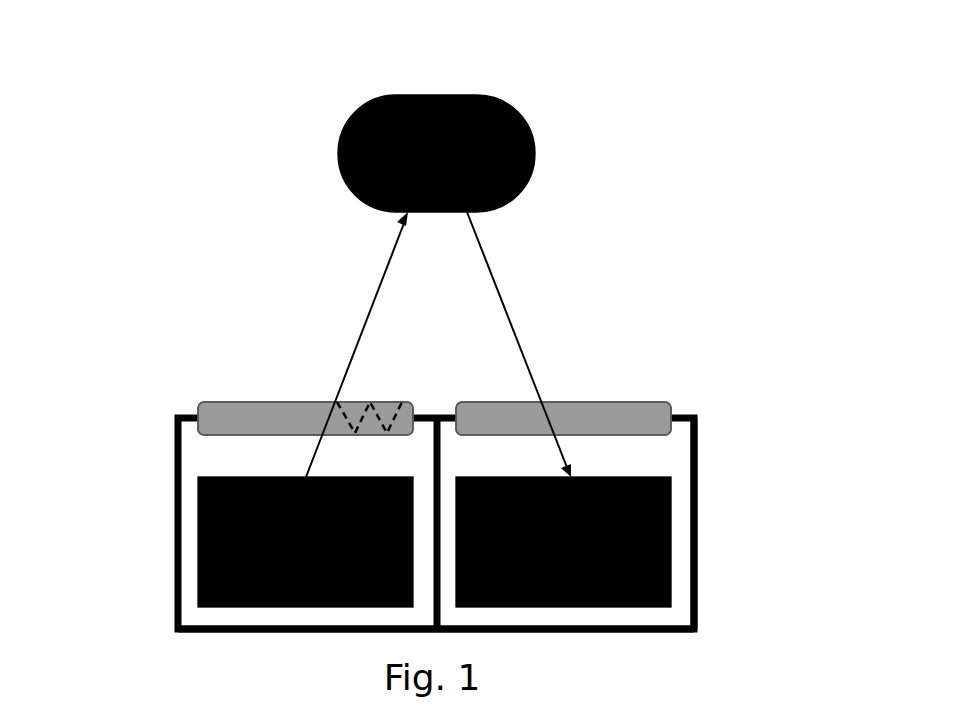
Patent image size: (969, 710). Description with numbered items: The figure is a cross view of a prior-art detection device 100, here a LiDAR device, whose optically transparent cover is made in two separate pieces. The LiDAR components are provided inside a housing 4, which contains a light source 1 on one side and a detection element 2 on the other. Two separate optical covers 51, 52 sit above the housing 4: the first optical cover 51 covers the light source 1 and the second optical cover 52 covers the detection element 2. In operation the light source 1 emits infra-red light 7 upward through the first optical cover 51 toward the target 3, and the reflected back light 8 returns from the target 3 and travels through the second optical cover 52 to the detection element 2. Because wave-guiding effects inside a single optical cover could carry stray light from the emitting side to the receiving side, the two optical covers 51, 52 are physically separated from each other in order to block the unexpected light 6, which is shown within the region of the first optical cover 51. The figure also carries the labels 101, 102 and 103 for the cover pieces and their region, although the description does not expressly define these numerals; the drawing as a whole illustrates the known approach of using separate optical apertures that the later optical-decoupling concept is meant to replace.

The light source 1 is at (198, 546).
The detection element 2 is at (671, 547).
The target 3 is at (435, 95).
The housing 4 is at (697, 605).
The unexpected light 6 is at (387, 410).
The infra-red light 7 is at (368, 318).
The reflected back light 8 is at (513, 317).
The first optical cover 51 is at (289, 420).
The second optical cover 52 is at (584, 420).
The detection device 100 is at (723, 500).
The cover 101 is at (775, 330).
The second cover portion 102 is at (642, 393).
The first cover portion 103 is at (232, 430).